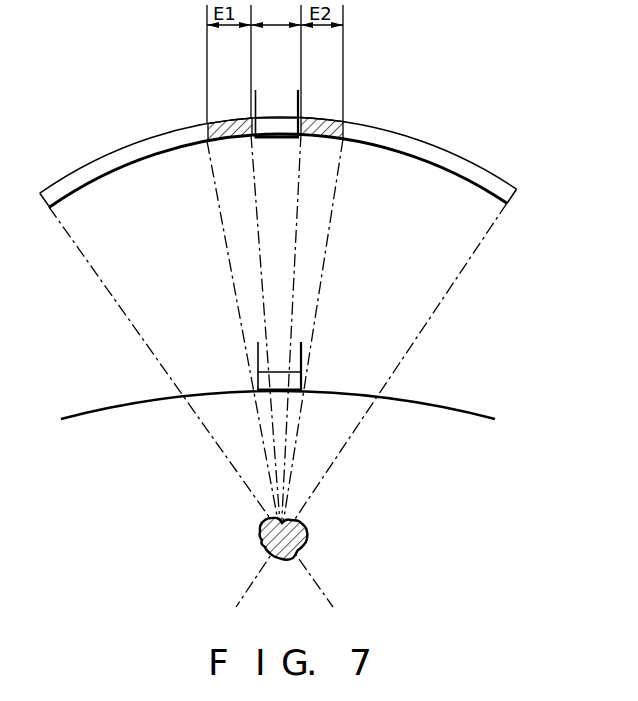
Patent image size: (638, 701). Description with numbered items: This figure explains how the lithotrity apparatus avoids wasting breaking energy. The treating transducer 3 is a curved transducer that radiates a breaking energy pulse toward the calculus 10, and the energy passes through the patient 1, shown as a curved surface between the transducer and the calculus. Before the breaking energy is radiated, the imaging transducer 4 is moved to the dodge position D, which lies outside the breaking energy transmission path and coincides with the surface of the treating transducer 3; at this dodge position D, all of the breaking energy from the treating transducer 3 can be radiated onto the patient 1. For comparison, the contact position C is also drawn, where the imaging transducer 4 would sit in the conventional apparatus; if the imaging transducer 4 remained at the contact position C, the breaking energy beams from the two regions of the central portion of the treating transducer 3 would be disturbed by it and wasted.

The patient 1 is at (467, 408).
The treating transducer 3 is at (387, 137).
The imaging transducer 4 is at (281, 128).
The calculus 10 is at (308, 540).
The contact position C is at (258, 375).
The dodge position D is at (265, 138).